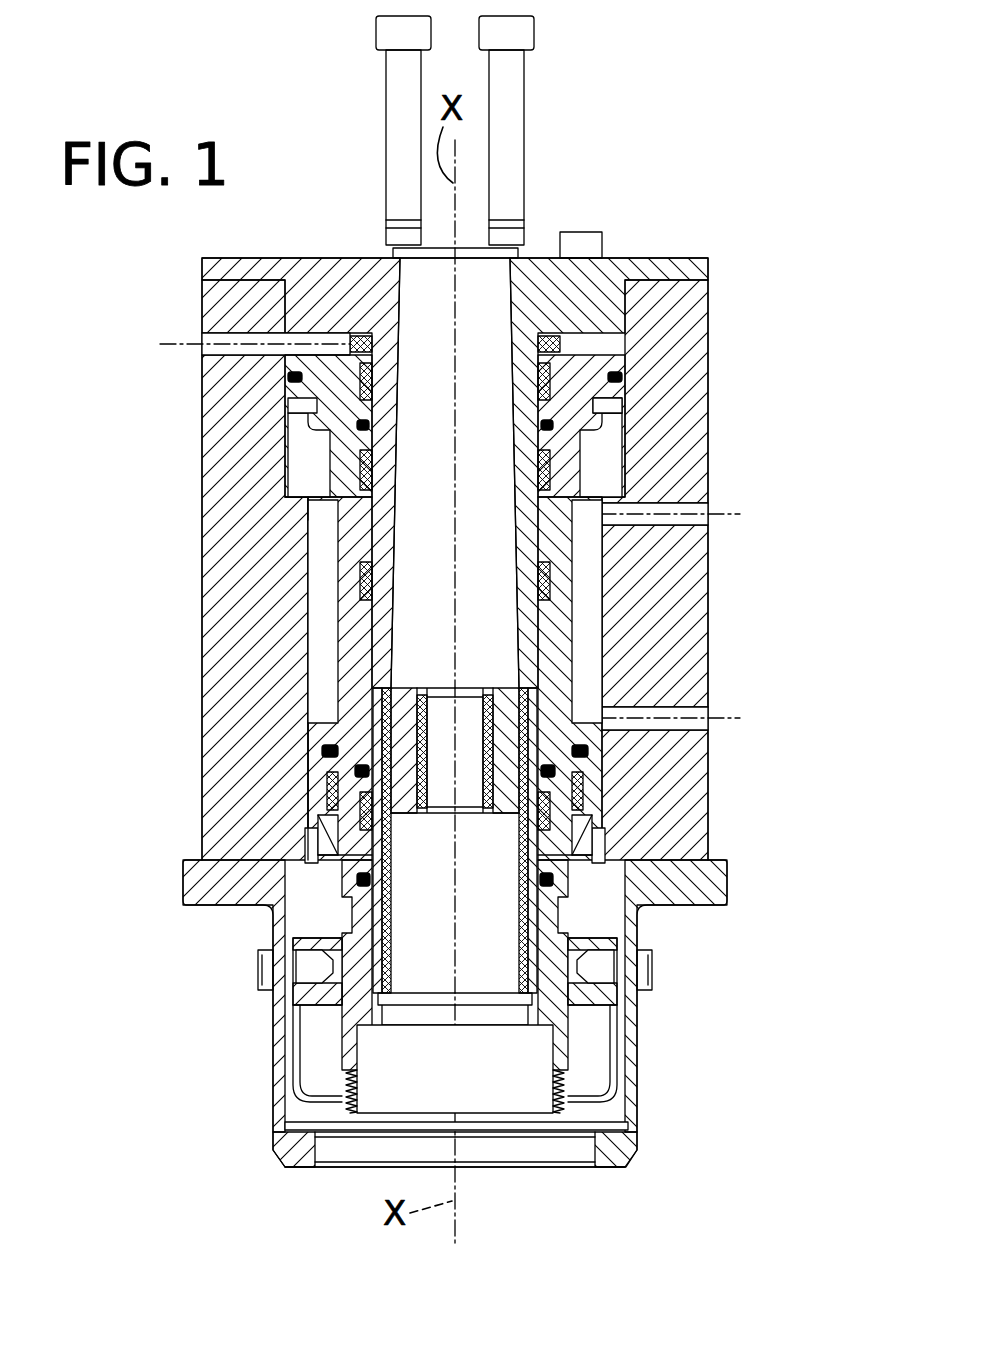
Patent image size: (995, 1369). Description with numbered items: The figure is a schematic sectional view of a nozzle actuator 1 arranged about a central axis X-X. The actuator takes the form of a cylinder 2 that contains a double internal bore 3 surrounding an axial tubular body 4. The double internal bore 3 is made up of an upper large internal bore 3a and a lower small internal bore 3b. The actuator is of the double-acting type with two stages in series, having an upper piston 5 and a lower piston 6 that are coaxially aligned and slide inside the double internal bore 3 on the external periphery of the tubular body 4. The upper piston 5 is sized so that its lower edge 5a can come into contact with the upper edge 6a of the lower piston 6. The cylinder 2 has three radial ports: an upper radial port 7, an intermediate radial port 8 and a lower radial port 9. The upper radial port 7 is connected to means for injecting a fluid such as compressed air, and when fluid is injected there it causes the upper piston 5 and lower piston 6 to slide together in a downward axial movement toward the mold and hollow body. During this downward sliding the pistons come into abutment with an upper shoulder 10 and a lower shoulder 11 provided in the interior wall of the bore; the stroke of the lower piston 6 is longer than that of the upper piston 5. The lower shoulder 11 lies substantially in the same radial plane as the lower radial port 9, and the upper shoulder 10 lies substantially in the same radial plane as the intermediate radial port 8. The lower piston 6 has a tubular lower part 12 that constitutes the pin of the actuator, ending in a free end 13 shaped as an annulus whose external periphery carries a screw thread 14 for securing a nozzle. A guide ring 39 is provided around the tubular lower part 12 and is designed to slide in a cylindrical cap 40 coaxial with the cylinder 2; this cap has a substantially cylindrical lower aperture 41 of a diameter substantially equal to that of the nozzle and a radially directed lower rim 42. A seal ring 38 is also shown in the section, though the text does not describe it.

The nozzle actuator 1 is at (772, 541).
The cylinder 2 is at (677, 337).
The double internal bore 3 is at (610, 460).
The upper large internal bore 3a is at (603, 432).
The lower small internal bore 3b is at (593, 608).
The axial tubular body 4 is at (473, 300).
The upper piston 5 is at (585, 378).
The lower edge 5a is at (335, 500).
The lower piston 6 is at (557, 636).
The upper edge 6a is at (305, 555).
The upper radial port 7 is at (215, 352).
The intermediate radial port 8 is at (703, 513).
The lower radial port 9 is at (697, 722).
The upper shoulder 10 is at (290, 507).
The lower shoulder 11 is at (305, 742).
The tubular lower part 12 is at (552, 987).
The free end 13 is at (562, 1077).
The screw thread 14 is at (345, 1094).
The seal ring 38 is at (363, 334).
The guide ring 39 is at (298, 942).
The cylindrical cap 40 is at (636, 1108).
The lower aperture 41 is at (592, 1160).
The lower rim 42 is at (280, 1152).